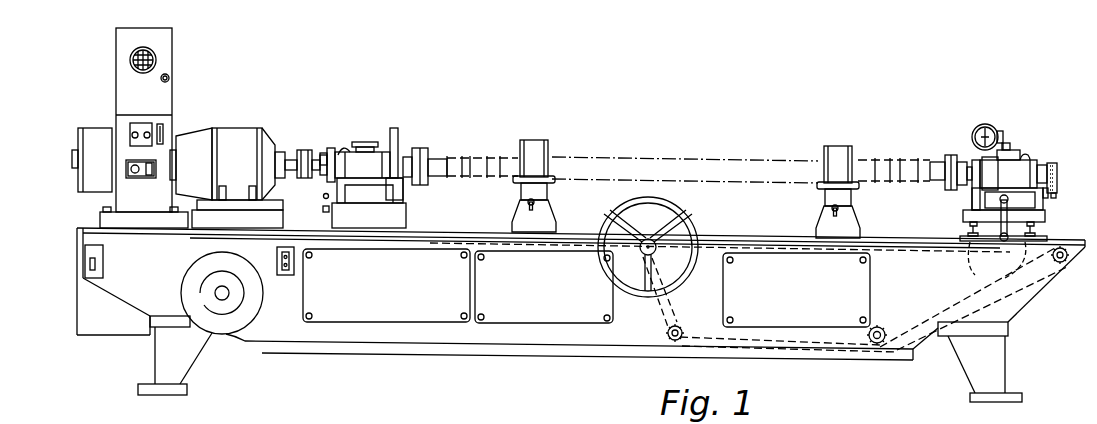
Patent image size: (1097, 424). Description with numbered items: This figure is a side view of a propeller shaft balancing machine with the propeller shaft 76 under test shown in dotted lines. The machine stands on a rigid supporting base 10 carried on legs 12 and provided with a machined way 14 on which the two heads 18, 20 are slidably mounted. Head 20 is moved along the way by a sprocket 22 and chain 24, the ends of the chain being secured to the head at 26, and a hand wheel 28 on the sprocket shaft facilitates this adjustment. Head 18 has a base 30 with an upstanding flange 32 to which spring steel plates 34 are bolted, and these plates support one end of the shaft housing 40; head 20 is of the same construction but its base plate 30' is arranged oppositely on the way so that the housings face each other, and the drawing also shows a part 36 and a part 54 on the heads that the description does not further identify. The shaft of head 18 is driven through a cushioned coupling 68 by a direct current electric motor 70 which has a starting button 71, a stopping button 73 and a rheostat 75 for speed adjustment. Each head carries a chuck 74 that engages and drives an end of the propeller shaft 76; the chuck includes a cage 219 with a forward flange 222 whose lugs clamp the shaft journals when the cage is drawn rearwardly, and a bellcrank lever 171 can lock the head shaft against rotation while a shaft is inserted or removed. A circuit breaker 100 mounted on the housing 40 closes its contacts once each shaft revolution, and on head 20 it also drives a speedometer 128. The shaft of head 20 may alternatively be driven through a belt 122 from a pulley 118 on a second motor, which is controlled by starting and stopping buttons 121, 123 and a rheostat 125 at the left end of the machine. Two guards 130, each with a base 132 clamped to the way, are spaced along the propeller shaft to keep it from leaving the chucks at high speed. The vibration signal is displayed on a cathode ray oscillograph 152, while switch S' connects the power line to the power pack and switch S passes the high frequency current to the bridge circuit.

The supporting base 10 is at (882, 352).
The legs 12 is at (192, 364).
The machined way 14 is at (78, 228).
The head 18 is at (333, 150).
The head 20 is at (1033, 172).
The sprocket 22 is at (659, 258).
The chain 24 is at (828, 347).
The chain end securing point 26 is at (997, 262).
The hand wheel 28 is at (690, 226).
The base 30 is at (392, 214).
The base plate 30' is at (983, 214).
The upstanding flange 32 is at (330, 198).
The spring steel plates 34 is at (325, 186).
The clamping lever 36 is at (1002, 199).
The shaft housing 40 is at (362, 147).
The slide housing 54 is at (358, 192).
The coupling 68 is at (305, 150).
The electric motor 70 is at (237, 132).
The starting button 71 is at (147, 132).
The stopping button 73 is at (132, 130).
The chuck 74 is at (430, 156).
The rheostat 75 is at (72, 160).
The propeller shaft 76 is at (660, 152).
The circuit breaker 100 is at (370, 150).
The pulley 118 is at (1057, 176).
The starting button 121 is at (280, 263).
The belt 122 is at (1057, 194).
The stopping button 123 is at (285, 275).
The rheostat 125 is at (218, 292).
The speedometer 128 is at (990, 124).
The guards 130 is at (532, 150).
The guard base 132 is at (550, 228).
The oscillograph 152 is at (163, 52).
The bellcrank lever 171 is at (397, 136).
The cage 219 is at (412, 156).
The forward flange 222 is at (425, 175).
The switch S is at (175, 127).
The switch S' is at (141, 185).